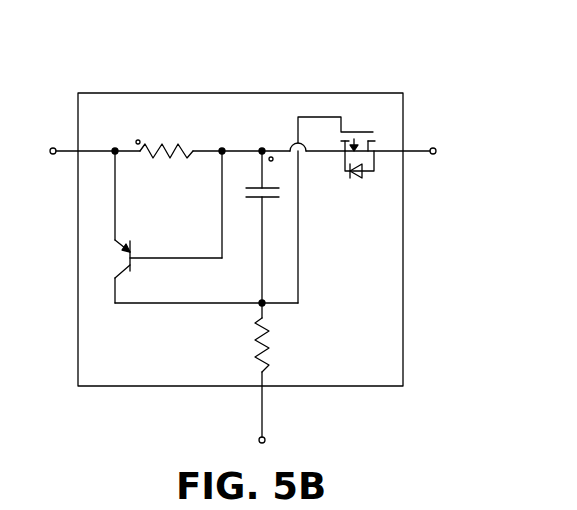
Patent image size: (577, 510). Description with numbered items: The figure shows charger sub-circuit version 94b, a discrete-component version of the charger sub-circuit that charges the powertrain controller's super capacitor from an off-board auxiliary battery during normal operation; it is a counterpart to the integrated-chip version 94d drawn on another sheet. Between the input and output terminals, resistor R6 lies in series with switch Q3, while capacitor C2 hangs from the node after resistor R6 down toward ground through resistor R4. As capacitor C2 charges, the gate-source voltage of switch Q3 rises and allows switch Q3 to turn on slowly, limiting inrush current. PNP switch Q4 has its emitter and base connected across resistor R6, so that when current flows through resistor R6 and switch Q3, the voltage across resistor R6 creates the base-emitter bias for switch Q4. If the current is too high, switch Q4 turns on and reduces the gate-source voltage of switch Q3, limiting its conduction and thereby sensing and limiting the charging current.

The charger sub-circuit version 94b is at (292, 244).
The charger sub-circuit version 94d is at (490, 509).
The resistor R6 is at (166, 141).
The resistor R4 is at (277, 370).
The capacitor C2 is at (253, 227).
The switch Q3 is at (356, 173).
The PNP switch Q4 is at (168, 227).